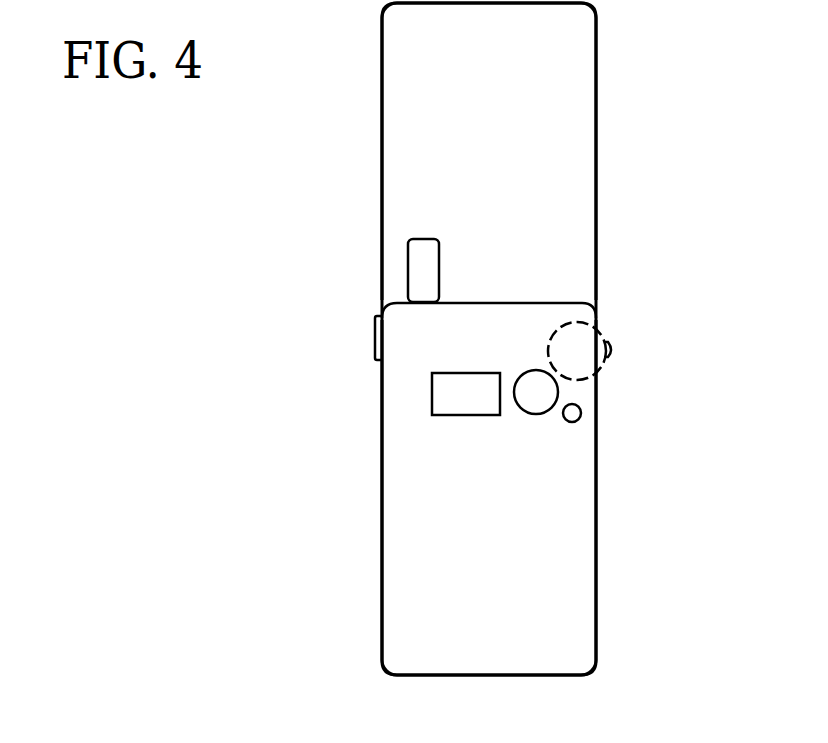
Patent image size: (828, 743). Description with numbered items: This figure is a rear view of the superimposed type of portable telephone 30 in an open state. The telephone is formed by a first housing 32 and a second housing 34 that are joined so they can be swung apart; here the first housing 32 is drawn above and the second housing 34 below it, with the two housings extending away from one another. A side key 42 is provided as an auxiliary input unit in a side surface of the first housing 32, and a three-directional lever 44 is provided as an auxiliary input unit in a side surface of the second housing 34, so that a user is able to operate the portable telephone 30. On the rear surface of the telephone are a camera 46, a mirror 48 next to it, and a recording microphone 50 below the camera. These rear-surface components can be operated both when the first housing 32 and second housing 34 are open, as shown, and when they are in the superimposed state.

The portable telephone 30 is at (316, 472).
The first housing 32 is at (382, 146).
The second housing 34 is at (383, 585).
The side key 42 is at (376, 346).
The 3-directional lever 44 is at (613, 349).
The camera 46 is at (558, 390).
The mirror 48 is at (448, 404).
The recording microphone 50 is at (581, 413).